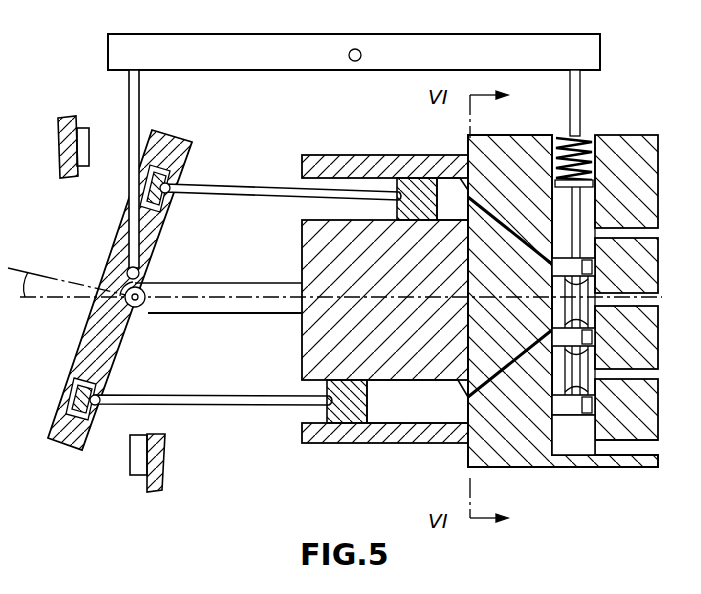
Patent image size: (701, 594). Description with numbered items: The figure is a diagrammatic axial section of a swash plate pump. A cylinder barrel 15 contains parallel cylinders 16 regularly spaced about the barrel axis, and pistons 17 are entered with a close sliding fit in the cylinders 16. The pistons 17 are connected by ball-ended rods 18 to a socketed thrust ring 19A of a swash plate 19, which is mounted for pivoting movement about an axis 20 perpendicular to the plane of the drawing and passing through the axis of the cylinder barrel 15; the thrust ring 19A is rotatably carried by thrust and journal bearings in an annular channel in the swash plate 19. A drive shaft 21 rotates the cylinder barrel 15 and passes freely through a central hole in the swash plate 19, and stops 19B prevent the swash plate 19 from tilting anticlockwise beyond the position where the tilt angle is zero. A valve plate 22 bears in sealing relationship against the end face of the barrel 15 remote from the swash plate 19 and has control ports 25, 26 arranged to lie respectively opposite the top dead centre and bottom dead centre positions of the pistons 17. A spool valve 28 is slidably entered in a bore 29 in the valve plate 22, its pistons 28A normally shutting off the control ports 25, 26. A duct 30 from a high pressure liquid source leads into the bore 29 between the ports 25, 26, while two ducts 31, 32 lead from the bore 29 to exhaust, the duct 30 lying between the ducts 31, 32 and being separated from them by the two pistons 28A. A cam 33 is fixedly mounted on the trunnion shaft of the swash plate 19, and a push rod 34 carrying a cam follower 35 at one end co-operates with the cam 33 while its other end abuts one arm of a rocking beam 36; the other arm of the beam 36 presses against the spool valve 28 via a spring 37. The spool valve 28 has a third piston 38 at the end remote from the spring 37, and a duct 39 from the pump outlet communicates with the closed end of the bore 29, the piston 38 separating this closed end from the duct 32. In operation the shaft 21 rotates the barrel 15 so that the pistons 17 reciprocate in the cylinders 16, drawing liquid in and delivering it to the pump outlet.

The cylinder barrel 15 is at (335, 242).
The cylinders 16 is at (352, 170).
The pistons 17 is at (420, 190).
The ball-ended rods 18 is at (237, 184).
The swash plate 19 is at (80, 345).
The thrust ring 19A is at (104, 388).
The stops 19B is at (82, 170).
The axis 20 is at (141, 312).
The drive shaft 21 is at (226, 314).
The valve plate 22 is at (504, 456).
The control port 25 is at (493, 216).
The control port 26 is at (490, 390).
The spool valve 28 is at (582, 290).
The pistons 28A is at (585, 268).
The bore 29 is at (572, 438).
The duct 30 is at (658, 310).
The duct 31 is at (656, 228).
The duct 32 is at (652, 380).
The cam 33 is at (120, 283).
The push rod 34 is at (129, 91).
The cam follower 35 is at (142, 270).
The rocking beam 36 is at (274, 40).
The spring 37 is at (586, 160).
The third piston 38 is at (585, 406).
The duct 39 is at (658, 456).